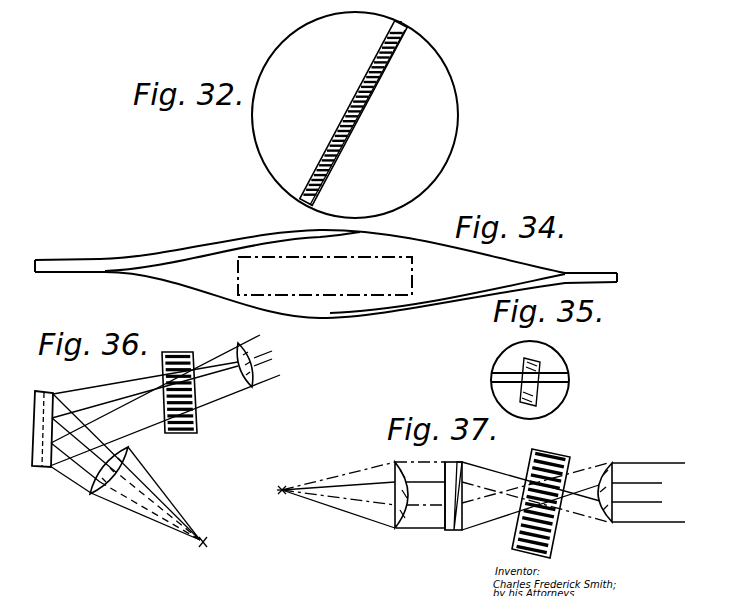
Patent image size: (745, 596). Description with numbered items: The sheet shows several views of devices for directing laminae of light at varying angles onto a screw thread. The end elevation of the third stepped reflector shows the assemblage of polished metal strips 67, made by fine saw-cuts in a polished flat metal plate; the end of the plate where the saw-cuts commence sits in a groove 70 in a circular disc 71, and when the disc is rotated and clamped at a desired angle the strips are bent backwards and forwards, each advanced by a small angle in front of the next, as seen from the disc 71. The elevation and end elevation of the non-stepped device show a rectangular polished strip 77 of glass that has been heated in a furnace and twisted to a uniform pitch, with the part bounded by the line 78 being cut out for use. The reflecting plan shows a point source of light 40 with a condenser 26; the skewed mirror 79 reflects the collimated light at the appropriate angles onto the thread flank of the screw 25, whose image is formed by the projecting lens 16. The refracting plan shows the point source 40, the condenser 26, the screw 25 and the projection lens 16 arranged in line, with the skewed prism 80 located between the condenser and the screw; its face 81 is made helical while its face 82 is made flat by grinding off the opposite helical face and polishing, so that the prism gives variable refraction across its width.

In FIG. 36, the projecting lens 16 is at (245, 388).
In FIG. 37, the projecting lens 16 is at (609, 464).
In FIG. 36, the screw 25 is at (180, 433).
In FIG. 37, the screw 25 is at (551, 455).
In FIG. 36, the condenser 26 is at (95, 496).
In FIG. 37, the condenser 26 is at (395, 518).
In FIG. 36, the point source of light 40 is at (218, 548).
In FIG. 37, the point source of light 40 is at (280, 478).
In FIG. 32, the polished metal strips 67 is at (364, 110).
In FIG. 32, the groove 70 is at (403, 28).
In FIG. 32, the circular disc 71 is at (437, 128).
In FIG. 34, the rectangular polished strip 77 is at (567, 272).
In FIG. 35, the rectangular polished strip 77 is at (552, 360).
In FIG. 34, the line 78 is at (280, 257).
In FIG. 35, the line 78 is at (538, 395).
In FIG. 36, the skewed mirror 79 is at (34, 446).
In FIG. 37, the skewed prism 80 is at (462, 463).
In FIG. 37, the helical face 81 is at (460, 529).
In FIG. 37, the flat face 82 is at (444, 496).